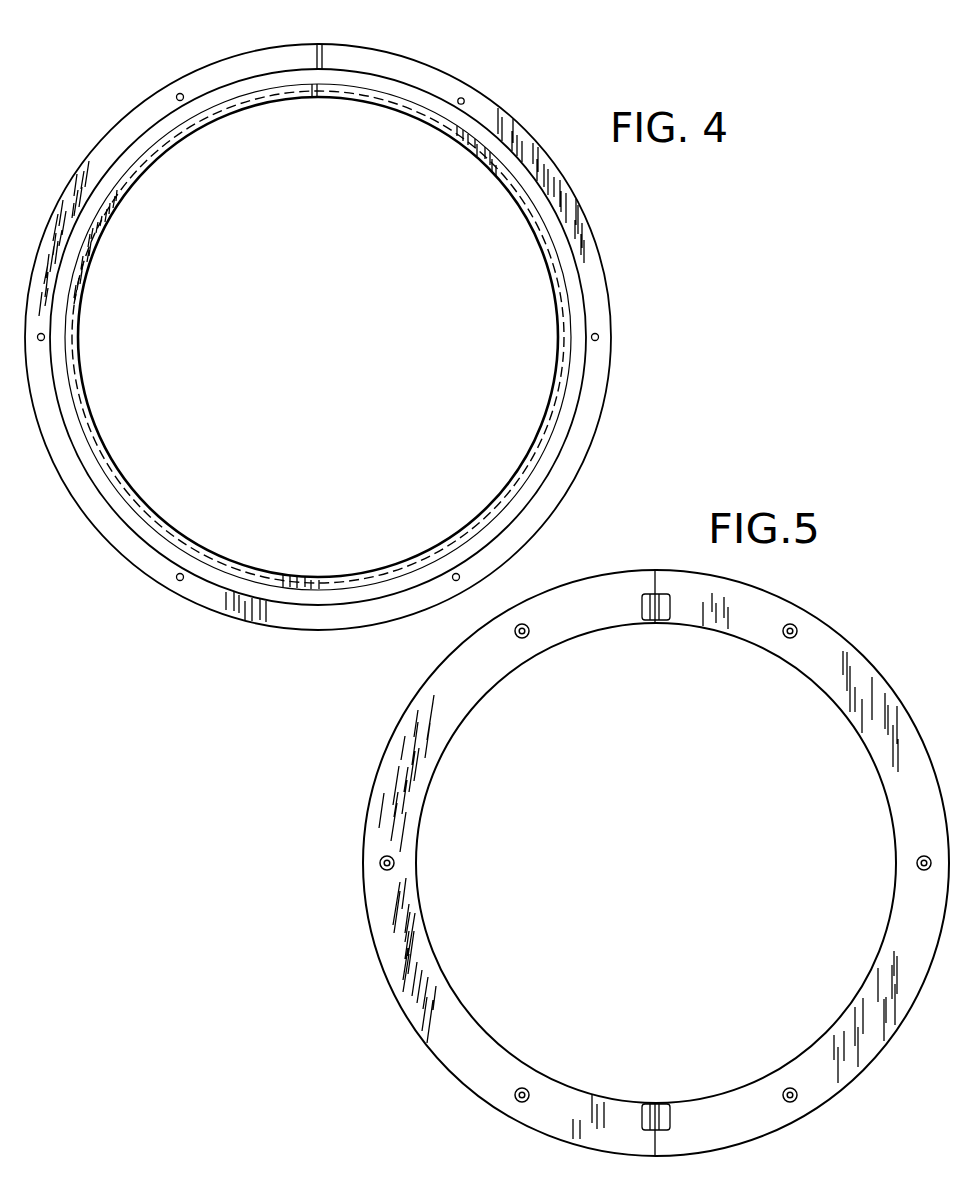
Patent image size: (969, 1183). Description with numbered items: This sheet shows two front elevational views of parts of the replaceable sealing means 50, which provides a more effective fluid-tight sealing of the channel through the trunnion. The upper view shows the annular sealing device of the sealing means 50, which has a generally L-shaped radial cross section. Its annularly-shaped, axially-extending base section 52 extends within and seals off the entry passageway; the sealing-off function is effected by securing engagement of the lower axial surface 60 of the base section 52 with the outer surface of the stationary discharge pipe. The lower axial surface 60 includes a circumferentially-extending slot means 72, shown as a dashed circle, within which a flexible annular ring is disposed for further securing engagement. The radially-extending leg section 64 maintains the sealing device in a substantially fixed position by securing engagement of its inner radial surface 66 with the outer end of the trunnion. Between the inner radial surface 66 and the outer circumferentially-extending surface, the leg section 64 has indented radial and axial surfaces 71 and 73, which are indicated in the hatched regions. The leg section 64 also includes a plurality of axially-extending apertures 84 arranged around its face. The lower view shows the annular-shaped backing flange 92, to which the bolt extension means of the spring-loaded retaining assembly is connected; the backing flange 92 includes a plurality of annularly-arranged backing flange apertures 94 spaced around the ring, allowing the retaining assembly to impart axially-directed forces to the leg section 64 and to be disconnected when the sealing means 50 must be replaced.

In FIG. 4, the replaceable sealing means 50 is at (127, 585).
In FIG. 4, the base section 52 is at (107, 452).
In FIG. 4, the lower axial surface 60 is at (163, 523).
In FIG. 4, the leg section 64 is at (95, 517).
In FIG. 4, the inner radial surface 66 is at (183, 562).
In FIG. 4, the indented radial surface 71 is at (490, 110).
In FIG. 4, the indented axial surface 73 is at (500, 140).
In FIG. 4, the slot means 72 is at (118, 488).
In FIG. 4, the axially-extending apertures 84 is at (464, 98).
In FIG. 5, the backing flange 92 is at (856, 660).
In FIG. 5, the backing flange apertures 94 is at (796, 631).